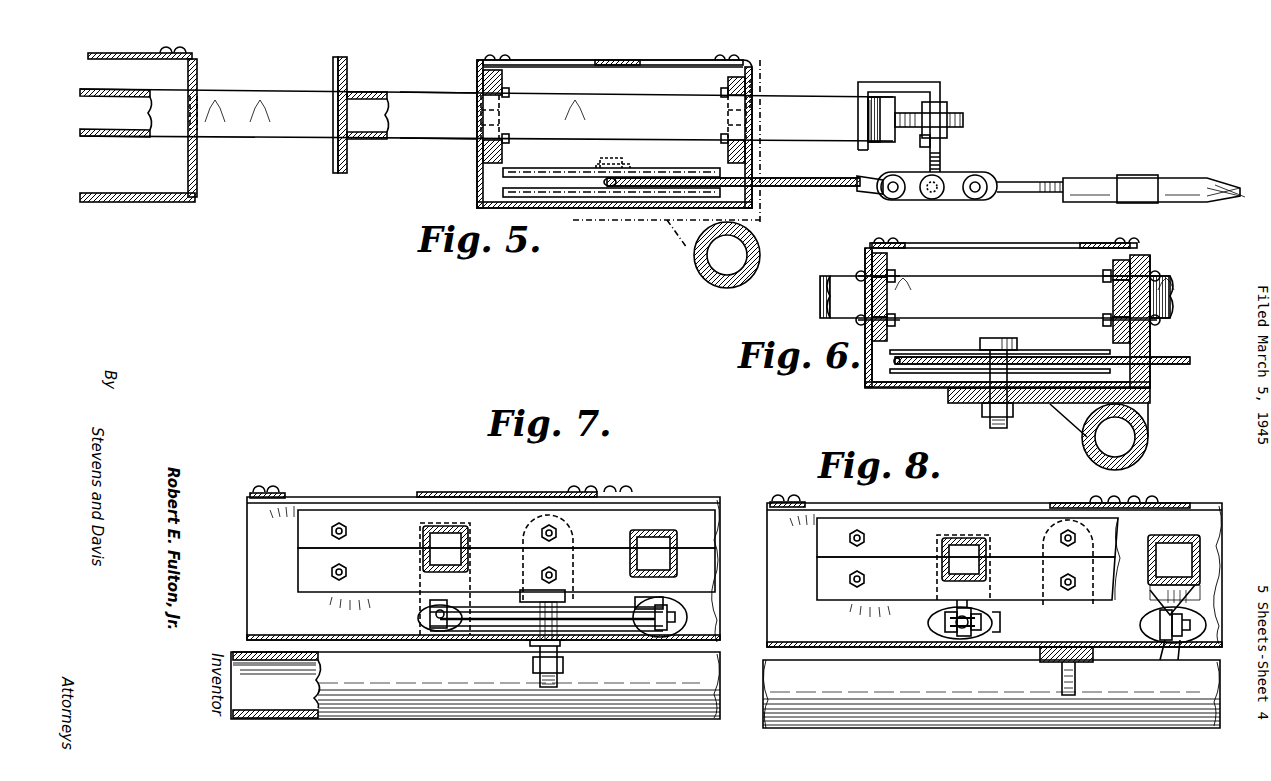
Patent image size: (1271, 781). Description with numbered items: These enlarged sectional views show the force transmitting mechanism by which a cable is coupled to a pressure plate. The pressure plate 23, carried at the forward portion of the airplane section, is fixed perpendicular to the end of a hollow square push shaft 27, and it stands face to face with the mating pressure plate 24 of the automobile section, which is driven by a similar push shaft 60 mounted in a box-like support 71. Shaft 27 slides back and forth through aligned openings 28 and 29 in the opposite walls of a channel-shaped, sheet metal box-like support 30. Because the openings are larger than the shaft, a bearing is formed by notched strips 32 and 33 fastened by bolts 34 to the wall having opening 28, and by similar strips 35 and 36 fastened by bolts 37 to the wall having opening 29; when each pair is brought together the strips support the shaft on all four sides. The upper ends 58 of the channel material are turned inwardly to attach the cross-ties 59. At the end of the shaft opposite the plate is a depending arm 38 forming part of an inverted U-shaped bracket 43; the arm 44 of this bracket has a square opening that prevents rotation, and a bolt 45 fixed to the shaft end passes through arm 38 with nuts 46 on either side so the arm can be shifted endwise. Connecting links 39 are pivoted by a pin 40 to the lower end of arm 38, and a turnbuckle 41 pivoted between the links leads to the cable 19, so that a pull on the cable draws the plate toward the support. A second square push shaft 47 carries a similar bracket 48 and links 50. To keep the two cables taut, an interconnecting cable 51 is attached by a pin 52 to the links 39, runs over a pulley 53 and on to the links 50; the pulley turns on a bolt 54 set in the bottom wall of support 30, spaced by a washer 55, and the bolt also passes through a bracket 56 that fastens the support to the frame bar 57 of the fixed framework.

In FIG. 5, the cable 19 is at (1216, 185).
In FIG. 5, the pressure plate 23 is at (348, 66).
In FIG. 5, the pressure plate 24 is at (337, 63).
In FIG. 5, the square push shaft 27 is at (427, 99).
In FIG. 6, the square push shaft 27 is at (968, 290).
In FIG. 7, the square push shaft 27 is at (471, 540).
In FIG. 8, the square push shaft 27 is at (942, 556).
In FIG. 5, the opening 28 is at (479, 88).
In FIG. 5, the opening 29 is at (752, 94).
In FIG. 7, the opening 29 is at (420, 535).
In FIG. 8, the opening 29 is at (991, 605).
In FIG. 5, the box-like support 30 is at (608, 214).
In FIG. 6, the box-like support 30 is at (931, 391).
In FIG. 7, the box-like support 30 is at (248, 506).
In FIG. 8, the box-like support 30 is at (769, 509).
In FIG. 5, the strip 32 is at (503, 77).
In FIG. 6, the strip 32 is at (889, 262).
In FIG. 5, the strip 33 is at (503, 160).
In FIG. 6, the strip 33 is at (889, 335).
In FIG. 5, the bolt 34 is at (509, 92).
In FIG. 6, the bolt 34 is at (896, 286).
In FIG. 5, the strip 35 is at (723, 81).
In FIG. 6, the strip 35 is at (1112, 270).
In FIG. 7, the strip 35 is at (300, 531).
In FIG. 8, the strip 35 is at (820, 538).
In FIG. 5, the strip 36 is at (728, 154).
In FIG. 6, the strip 36 is at (1112, 337).
In FIG. 7, the strip 36 is at (300, 578).
In FIG. 8, the strip 36 is at (820, 587).
In FIG. 5, the bolt 37 is at (718, 90).
In FIG. 6, the bolt 37 is at (1108, 290).
In FIG. 7, the bolt 37 is at (349, 572).
In FIG. 8, the bolt 37 is at (866, 580).
In FIG. 5, the depending arm 38 is at (940, 159).
In FIG. 7, the depending arm 38 is at (429, 610).
In FIG. 8, the depending arm 38 is at (945, 615).
In FIG. 5, the connecting link 39 is at (960, 176).
In FIG. 8, the connecting link 39 is at (976, 645).
In FIG. 5, the pin 40 is at (927, 201).
In FIG. 5, the turnbuckle 41 is at (1095, 180).
In FIG. 5, the bracket 43 is at (896, 84).
In FIG. 5, the arm 44 is at (864, 106).
In FIG. 5, the bolt 45 is at (965, 119).
In FIG. 5, the nut 46 is at (949, 107).
In FIG. 7, the square push shaft 47 is at (678, 546).
In FIG. 8, the square push shaft 47 is at (1186, 533).
In FIG. 7, the bracket 48 is at (640, 597).
In FIG. 8, the bracket 48 is at (1161, 605).
In FIG. 8, the link 50 is at (1166, 651).
In FIG. 5, the cable 51 is at (795, 183).
In FIG. 6, the cable 51 is at (1171, 362).
In FIG. 7, the cable 51 is at (432, 622).
In FIG. 8, the cable 51 is at (960, 641).
In FIG. 5, the pin 52 is at (878, 182).
In FIG. 8, the pin 52 is at (992, 616).
In FIG. 5, the pulley 53 is at (565, 201).
In FIG. 6, the pulley 53 is at (946, 352).
In FIG. 7, the pulley 53 is at (491, 604).
In FIG. 5, the bolt 54 is at (627, 161).
In FIG. 6, the bolt 54 is at (1016, 345).
In FIG. 7, the bolt 54 is at (537, 674).
In FIG. 6, the washer 55 is at (984, 401).
In FIG. 7, the washer 55 is at (581, 646).
In FIG. 6, the bracket 56 is at (1041, 406).
In FIG. 7, the bracket 56 is at (545, 645).
In FIG. 8, the bracket 56 is at (1081, 668).
In FIG. 5, the frame bar 57 is at (701, 271).
In FIG. 6, the frame bar 57 is at (1084, 455).
In FIG. 7, the frame bar 57 is at (428, 718).
In FIG. 8, the frame bar 57 is at (985, 731).
In FIG. 5, the upper ends 58 is at (520, 61).
In FIG. 6, the upper ends 58 is at (900, 241).
In FIG. 7, the upper ends 58 is at (313, 497).
In FIG. 8, the upper ends 58 is at (966, 505).
In FIG. 5, the cross-tie 59 is at (616, 60).
In FIG. 6, the cross-tie 59 is at (1060, 243).
In FIG. 7, the cross-tie 59 is at (286, 491).
In FIG. 8, the cross-tie 59 is at (786, 500).
In FIG. 5, the push shaft 60 is at (265, 91).
In FIG. 5, the box-like support 71 is at (199, 66).